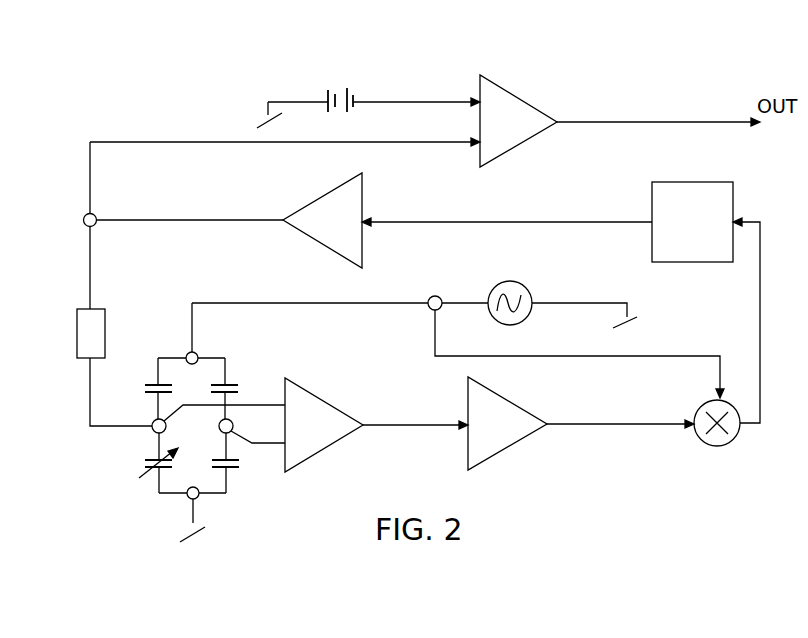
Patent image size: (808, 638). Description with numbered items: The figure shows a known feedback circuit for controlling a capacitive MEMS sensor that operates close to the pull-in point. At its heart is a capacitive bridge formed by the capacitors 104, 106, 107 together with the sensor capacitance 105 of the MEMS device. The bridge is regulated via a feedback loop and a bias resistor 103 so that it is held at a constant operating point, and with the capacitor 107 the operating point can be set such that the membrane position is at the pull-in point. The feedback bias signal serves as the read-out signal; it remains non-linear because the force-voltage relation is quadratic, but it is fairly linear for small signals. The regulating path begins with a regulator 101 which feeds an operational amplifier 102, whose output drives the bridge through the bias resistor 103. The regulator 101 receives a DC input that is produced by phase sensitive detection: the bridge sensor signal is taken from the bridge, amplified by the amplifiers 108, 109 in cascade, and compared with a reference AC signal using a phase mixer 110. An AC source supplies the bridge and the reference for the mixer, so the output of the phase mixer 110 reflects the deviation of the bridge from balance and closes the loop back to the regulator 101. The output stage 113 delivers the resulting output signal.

The regulator 101 is at (678, 232).
The operational amplifier 102 is at (320, 229).
The bias resistor 103 is at (79, 342).
The capacitor 104 is at (151, 378).
The sensor capacitance 105 is at (150, 477).
The capacitor 106 is at (231, 378).
The capacitor 107 is at (233, 477).
The amplifier 108 is at (299, 434).
The amplifier 109 is at (482, 433).
The phase mixer 110 is at (695, 404).
The comparator 113 is at (495, 131).